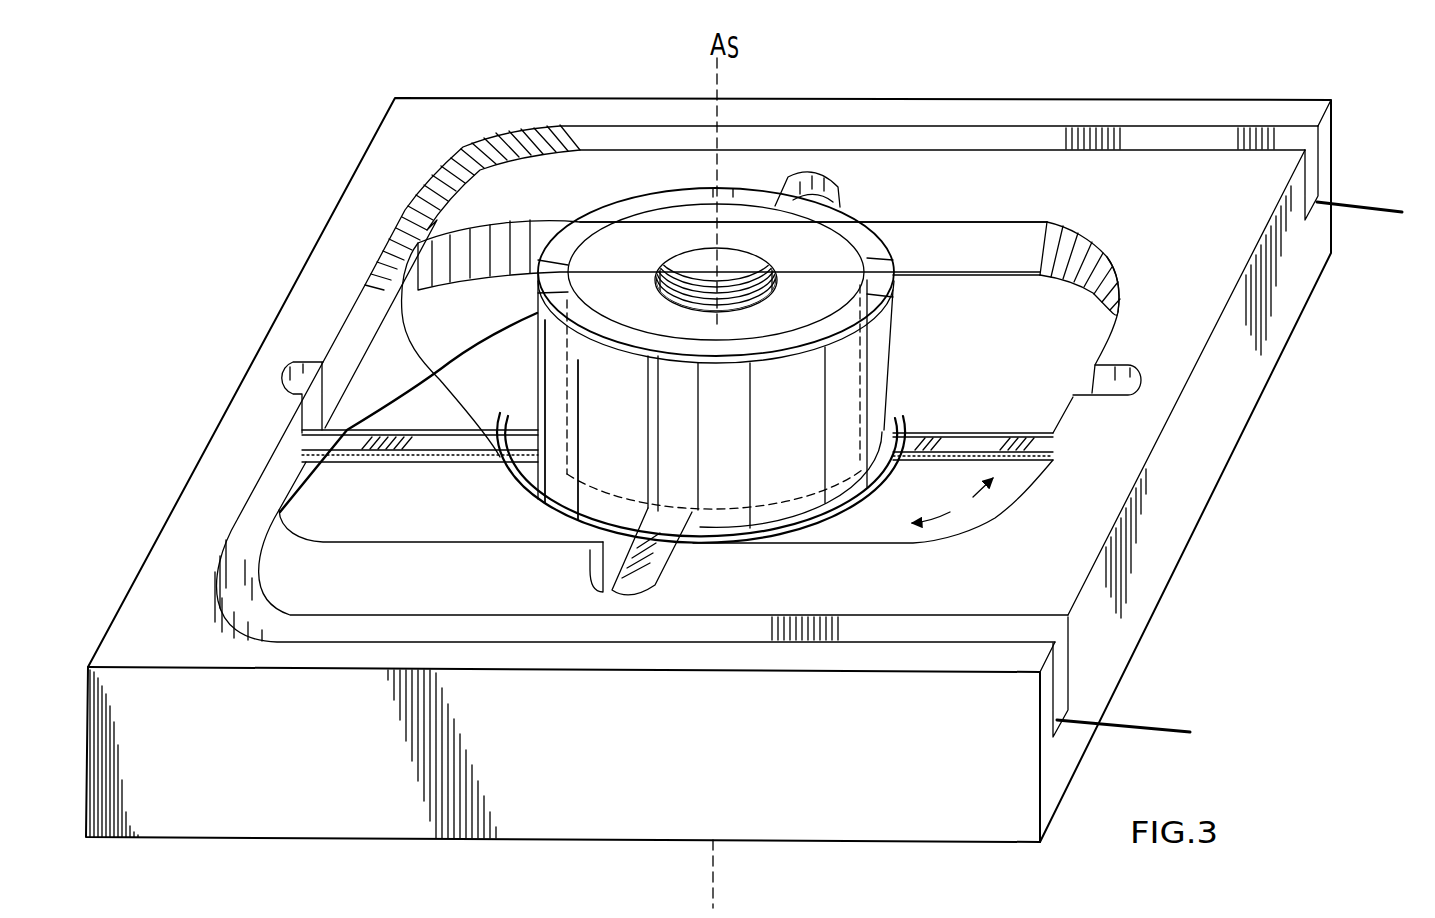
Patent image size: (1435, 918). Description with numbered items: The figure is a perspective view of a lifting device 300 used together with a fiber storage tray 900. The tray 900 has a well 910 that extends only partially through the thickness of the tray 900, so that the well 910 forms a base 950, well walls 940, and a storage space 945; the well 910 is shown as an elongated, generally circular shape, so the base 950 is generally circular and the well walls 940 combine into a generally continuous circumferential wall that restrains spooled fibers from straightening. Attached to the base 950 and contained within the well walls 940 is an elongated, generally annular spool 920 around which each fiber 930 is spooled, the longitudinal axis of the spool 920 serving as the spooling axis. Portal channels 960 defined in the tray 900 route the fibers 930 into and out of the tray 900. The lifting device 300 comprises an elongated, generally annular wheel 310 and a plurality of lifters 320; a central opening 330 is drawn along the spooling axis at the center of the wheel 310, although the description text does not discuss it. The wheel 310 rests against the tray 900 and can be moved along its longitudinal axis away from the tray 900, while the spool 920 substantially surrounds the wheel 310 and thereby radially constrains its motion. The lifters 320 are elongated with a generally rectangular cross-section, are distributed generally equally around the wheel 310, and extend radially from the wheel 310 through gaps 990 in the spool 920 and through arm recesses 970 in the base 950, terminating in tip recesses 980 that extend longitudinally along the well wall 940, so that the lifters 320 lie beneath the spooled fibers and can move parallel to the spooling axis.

The lifting device 300 is at (727, 301).
The wheel 310 is at (622, 258).
The lifters 320 is at (447, 440).
The central bore 330 is at (768, 262).
The fiber storage tray 900 is at (864, 736).
The well 910 is at (866, 528).
The spool 920 is at (872, 252).
The fiber 930 is at (1340, 203).
The well walls 940 is at (1093, 270).
The storage space 945 is at (952, 500).
The base 950 is at (1035, 388).
The portal channels 960 is at (1317, 154).
The arm recesses 970 is at (447, 432).
The tip recesses 980 is at (838, 186).
The gaps 990 is at (890, 275).